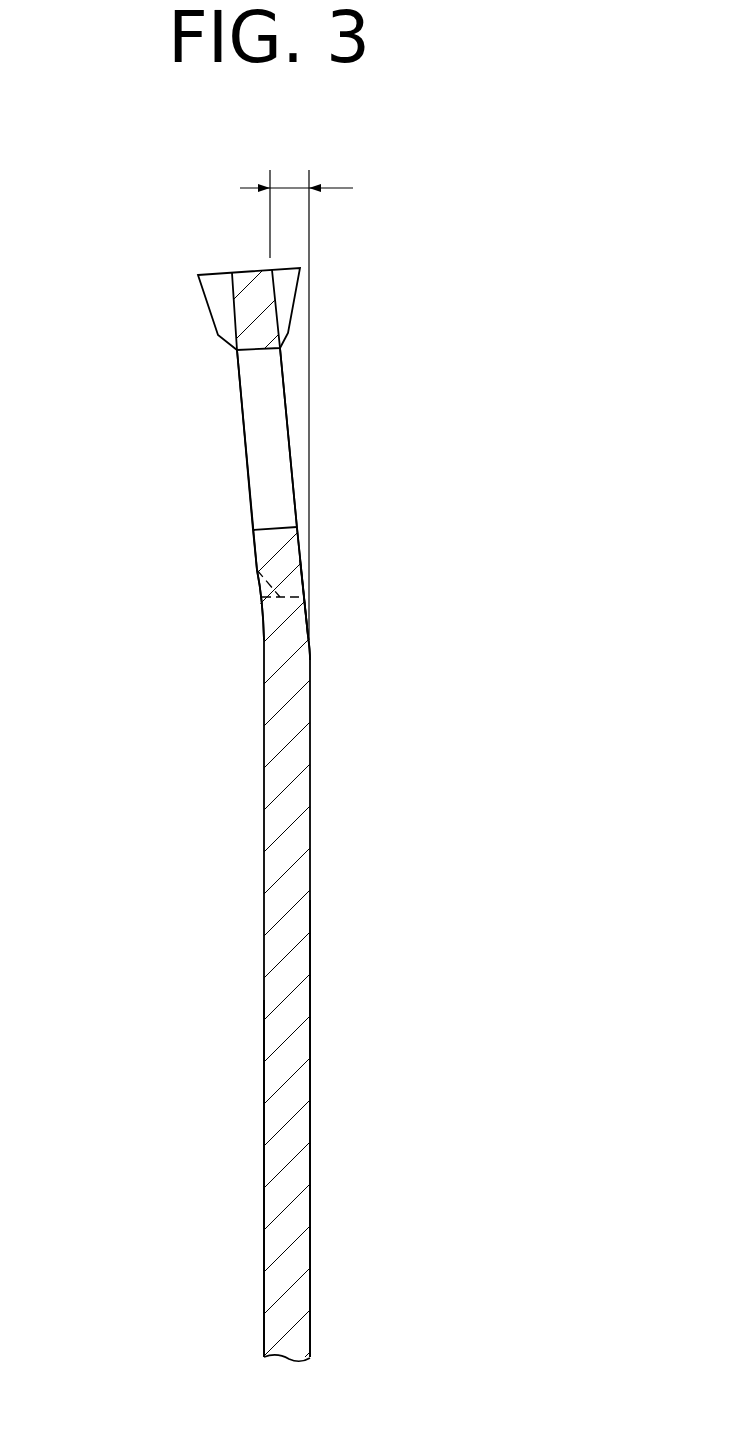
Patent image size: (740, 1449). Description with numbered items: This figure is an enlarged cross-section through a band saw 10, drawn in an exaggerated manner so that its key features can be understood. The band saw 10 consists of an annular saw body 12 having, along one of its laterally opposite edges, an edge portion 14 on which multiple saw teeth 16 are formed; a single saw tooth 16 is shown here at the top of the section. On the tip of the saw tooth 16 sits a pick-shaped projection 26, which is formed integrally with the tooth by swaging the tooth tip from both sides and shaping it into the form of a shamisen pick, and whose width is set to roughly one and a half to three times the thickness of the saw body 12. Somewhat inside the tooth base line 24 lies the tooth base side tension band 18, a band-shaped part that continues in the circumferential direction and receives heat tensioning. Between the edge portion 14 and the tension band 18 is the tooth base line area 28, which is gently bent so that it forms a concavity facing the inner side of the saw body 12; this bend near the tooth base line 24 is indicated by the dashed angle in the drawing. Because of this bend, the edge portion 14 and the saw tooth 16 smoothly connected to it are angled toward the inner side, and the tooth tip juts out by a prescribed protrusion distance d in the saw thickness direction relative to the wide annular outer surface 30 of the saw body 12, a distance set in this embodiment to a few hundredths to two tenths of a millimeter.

The band saw 10 is at (92, 310).
The saw body 12 is at (240, 1207).
The edge portion 14 is at (321, 584).
The saw tooth 16 is at (253, 552).
The tooth base side tension band 18 is at (285, 890).
The tooth base line 24 is at (253, 568).
The pick-shaped projection 26 is at (213, 295).
The tooth base line area 28 is at (283, 629).
The annular outer surface 30 is at (312, 1120).
The protrusion distance d is at (302, 391).